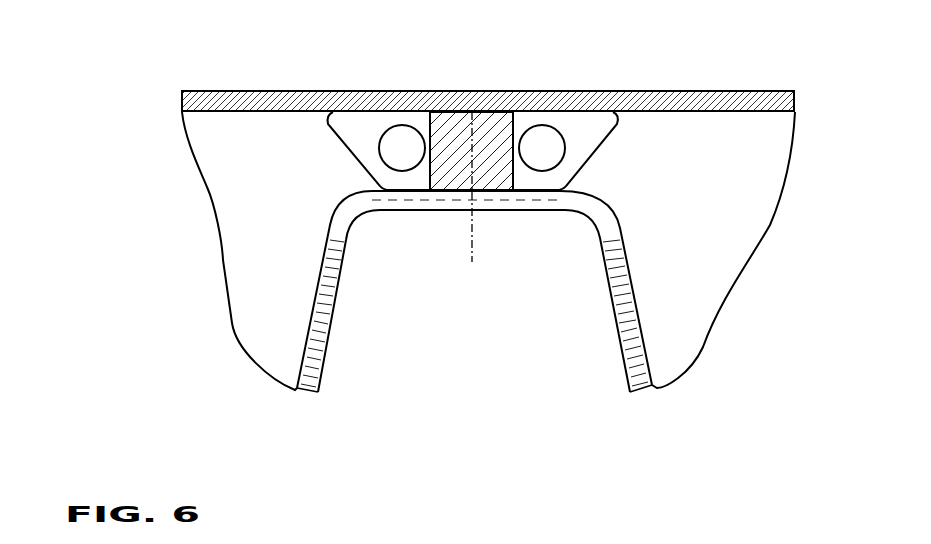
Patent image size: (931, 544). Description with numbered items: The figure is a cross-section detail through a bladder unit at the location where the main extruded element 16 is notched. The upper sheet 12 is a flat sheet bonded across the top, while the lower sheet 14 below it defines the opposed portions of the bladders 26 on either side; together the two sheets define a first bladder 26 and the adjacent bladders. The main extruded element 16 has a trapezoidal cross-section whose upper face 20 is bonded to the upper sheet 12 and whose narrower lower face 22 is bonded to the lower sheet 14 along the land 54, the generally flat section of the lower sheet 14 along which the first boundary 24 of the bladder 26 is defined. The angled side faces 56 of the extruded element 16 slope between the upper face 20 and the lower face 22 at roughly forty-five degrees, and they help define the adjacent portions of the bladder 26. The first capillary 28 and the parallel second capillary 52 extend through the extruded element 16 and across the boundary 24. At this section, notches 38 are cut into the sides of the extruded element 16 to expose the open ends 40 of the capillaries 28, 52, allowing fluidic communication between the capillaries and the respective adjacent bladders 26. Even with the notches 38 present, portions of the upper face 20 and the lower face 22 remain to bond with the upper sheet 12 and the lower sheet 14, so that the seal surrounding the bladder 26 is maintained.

The upper sheet 12 is at (283, 100).
The lower sheet 14 is at (628, 352).
The main extruded element 16 is at (503, 118).
The upper face 20 is at (521, 107).
The lower face 22 is at (446, 190).
The first boundary 24 is at (472, 232).
The first bladder 26 is at (291, 275).
The first capillary 28 is at (547, 143).
The notch 38 is at (350, 118).
The open end 40 is at (383, 167).
The second capillary 52 is at (400, 140).
The land 54 is at (520, 177).
The angled side face 56 is at (340, 147).